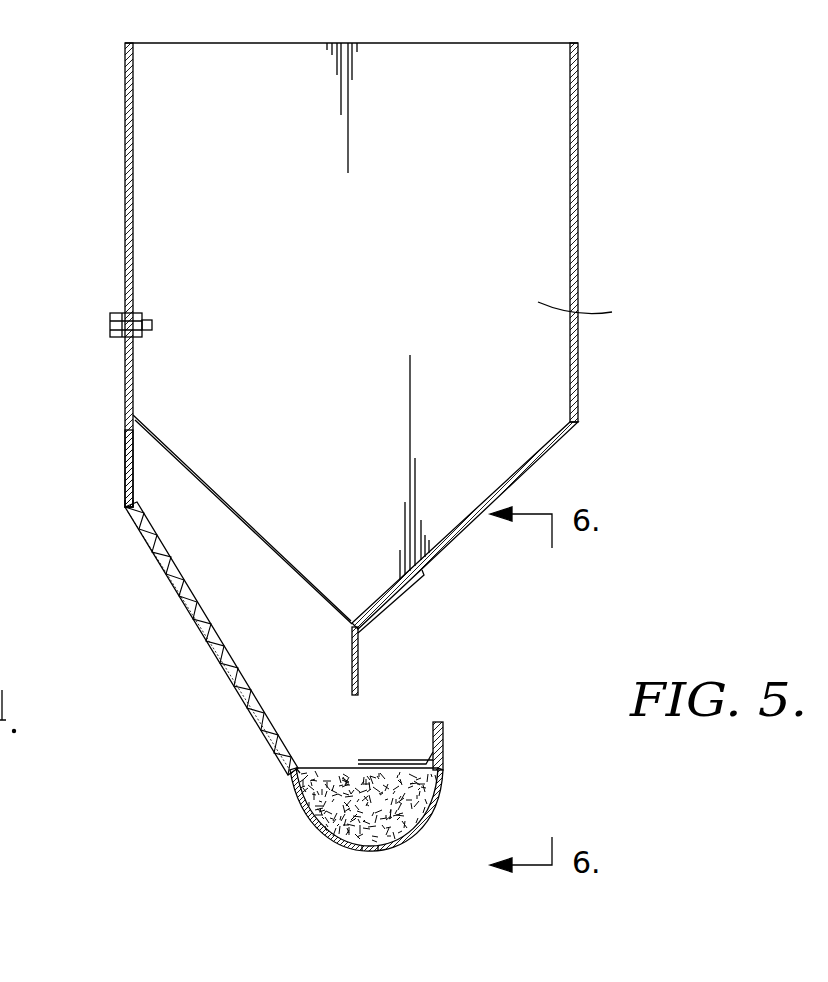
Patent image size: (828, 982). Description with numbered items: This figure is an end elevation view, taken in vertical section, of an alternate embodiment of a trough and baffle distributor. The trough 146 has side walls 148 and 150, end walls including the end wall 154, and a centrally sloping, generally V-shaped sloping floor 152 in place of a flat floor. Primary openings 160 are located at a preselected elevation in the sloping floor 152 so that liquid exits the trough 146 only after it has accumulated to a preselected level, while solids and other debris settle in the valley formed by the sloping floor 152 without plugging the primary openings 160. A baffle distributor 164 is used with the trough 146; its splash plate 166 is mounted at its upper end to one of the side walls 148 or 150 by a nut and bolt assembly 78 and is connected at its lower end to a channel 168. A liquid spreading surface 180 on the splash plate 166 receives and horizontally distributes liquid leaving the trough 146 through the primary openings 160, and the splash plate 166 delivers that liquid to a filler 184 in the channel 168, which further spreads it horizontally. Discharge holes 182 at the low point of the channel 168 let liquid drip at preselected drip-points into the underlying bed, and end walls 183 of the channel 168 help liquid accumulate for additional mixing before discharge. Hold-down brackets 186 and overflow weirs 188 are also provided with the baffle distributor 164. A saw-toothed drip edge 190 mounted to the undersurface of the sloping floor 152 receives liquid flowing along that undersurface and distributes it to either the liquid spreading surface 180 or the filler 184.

The nut and bolt assembly 78 is at (143, 318).
The trough 146 is at (409, 369).
The side wall 148 is at (578, 212).
The side wall 150 is at (133, 172).
The sloping floor 152 is at (450, 530).
The end wall 154 is at (596, 311).
The primary openings 160 is at (155, 432).
The baffle distributor 164 is at (112, 442).
The splash plate 166 is at (120, 488).
The channel 168 is at (440, 806).
The liquid spreading surface 180 is at (208, 612).
The discharge holes 182 is at (368, 851).
The end walls 183 is at (300, 773).
The filler 184 is at (440, 786).
The hold-down brackets 186 is at (432, 742).
The overflow weirs 188 is at (443, 738).
The saw-toothed drip edge 190 is at (362, 668).